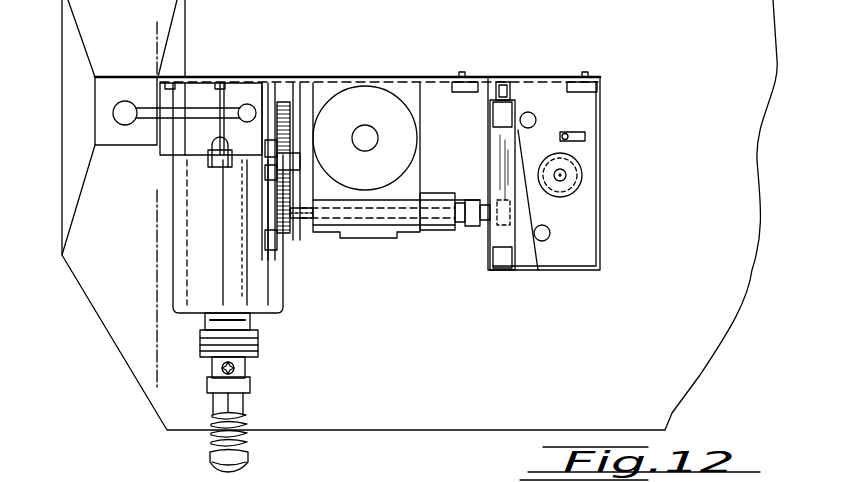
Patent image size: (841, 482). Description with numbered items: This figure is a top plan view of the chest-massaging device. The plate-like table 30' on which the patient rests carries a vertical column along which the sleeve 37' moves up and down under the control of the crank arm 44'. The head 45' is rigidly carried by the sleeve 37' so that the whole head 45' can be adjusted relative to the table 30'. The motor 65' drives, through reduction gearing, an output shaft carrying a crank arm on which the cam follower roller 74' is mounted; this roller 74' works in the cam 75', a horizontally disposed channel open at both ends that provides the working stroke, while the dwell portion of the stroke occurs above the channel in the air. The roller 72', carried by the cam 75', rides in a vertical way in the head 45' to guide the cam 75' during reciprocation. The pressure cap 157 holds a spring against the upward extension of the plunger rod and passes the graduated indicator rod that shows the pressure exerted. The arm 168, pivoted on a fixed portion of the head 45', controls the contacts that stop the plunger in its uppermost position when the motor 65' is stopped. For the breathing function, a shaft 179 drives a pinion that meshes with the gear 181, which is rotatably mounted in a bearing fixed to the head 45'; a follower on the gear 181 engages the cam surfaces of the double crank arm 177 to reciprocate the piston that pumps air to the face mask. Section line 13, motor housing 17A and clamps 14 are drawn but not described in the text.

The section line 13- 13 is at (152, 47).
The sleeve 37' is at (92, 111).
The crank arm 44' is at (199, 107).
The motor housing 17A is at (180, 222).
The hose clamps 14 is at (222, 352).
The gear 181 is at (300, 107).
The double crank arm 177 is at (272, 243).
The shaft 179 is at (300, 215).
The head 45' is at (390, 141).
The motor 65' is at (365, 120).
The cam follower roller 74' is at (480, 185).
The roller 72' is at (519, 83).
The cam 75' is at (474, 264).
The arm 168 is at (585, 137).
The pressure cap 157 is at (560, 175).
The table 30' is at (499, 387).